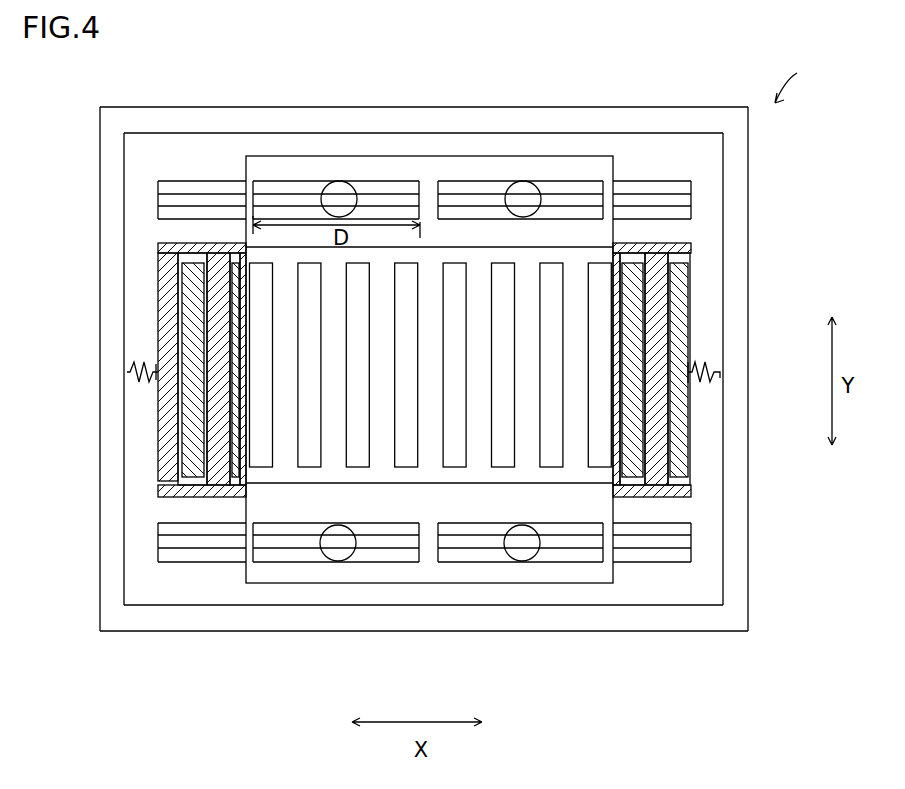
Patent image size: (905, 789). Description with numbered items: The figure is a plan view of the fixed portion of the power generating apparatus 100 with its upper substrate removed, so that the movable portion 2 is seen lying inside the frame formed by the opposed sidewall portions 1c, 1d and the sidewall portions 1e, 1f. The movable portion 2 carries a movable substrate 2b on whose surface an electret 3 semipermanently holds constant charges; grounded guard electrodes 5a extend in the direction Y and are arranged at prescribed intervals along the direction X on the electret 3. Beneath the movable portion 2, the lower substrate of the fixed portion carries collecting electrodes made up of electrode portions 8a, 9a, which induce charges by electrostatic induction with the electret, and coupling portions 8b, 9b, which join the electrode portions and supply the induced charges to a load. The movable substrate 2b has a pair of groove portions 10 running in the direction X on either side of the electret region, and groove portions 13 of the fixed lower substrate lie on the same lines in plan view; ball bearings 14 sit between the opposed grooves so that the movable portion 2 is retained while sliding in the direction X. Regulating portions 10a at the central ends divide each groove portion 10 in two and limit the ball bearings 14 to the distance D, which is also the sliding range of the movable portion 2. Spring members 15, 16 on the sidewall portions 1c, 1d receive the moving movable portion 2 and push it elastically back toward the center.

The power generating apparatus 100 is at (807, 83).
The sidewall portion 1c is at (112, 487).
The sidewall portion 1d is at (733, 543).
The sidewall portion 1e is at (490, 108).
The sidewall portion 1f is at (560, 625).
The movable portion 2 is at (243, 577).
The movable substrate 2b is at (273, 577).
The electret 3 is at (332, 443).
The guard electrodes 5a is at (460, 263).
The electrode portions 8a is at (167, 305).
The coupling portion 8b is at (692, 243).
The electrode portions 9a is at (168, 423).
The coupling portion 9b is at (655, 496).
The groove portions 10 is at (268, 180).
The regulating portions 10a is at (428, 190).
The groove portions 13 is at (680, 182).
The ball bearings 14 is at (339, 195).
The spring member 15 is at (127, 368).
The spring member 16 is at (707, 386).